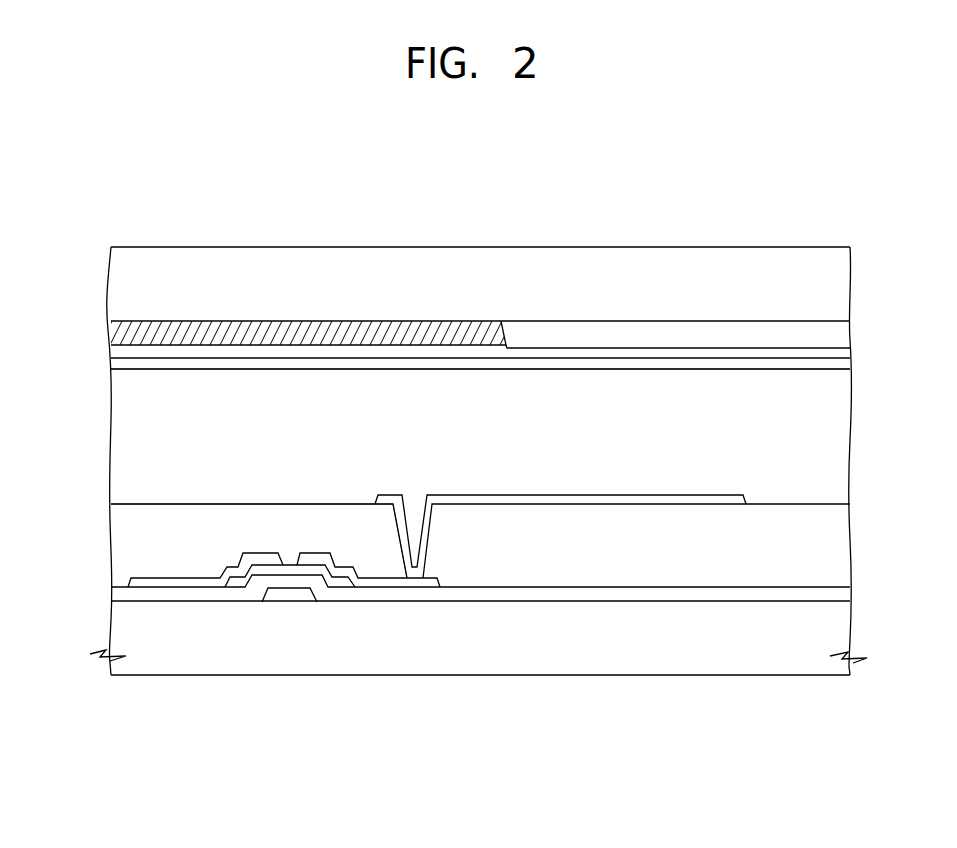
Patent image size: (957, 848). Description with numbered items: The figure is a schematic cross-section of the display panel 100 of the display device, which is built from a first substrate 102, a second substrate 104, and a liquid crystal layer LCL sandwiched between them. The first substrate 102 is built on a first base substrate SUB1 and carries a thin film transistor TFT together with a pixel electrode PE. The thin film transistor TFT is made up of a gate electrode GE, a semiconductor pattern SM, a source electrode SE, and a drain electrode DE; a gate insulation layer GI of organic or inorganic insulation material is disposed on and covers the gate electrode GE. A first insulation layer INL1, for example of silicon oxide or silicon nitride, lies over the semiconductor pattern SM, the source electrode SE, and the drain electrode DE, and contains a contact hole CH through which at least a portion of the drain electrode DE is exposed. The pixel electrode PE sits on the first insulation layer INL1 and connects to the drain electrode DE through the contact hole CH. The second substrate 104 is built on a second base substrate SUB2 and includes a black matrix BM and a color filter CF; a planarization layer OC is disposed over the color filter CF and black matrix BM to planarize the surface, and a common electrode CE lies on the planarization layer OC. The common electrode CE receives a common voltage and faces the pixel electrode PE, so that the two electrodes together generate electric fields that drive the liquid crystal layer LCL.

The display panel 100 is at (842, 190).
The first substrate 102 is at (83, 505).
The second substrate 104 is at (84, 247).
The first base substrate SUB1 is at (833, 630).
The second base substrate SUB2 is at (835, 285).
The black matrix BM is at (370, 330).
The color filter CF is at (836, 334).
The planarization layer OC is at (840, 355).
The common electrode CE is at (836, 374).
The liquid crystal layer LCL is at (833, 430).
The first insulation layer INL1 is at (835, 543).
The gate insulation layer GI is at (833, 593).
The gate electrode GE is at (289, 601).
The semiconductor pattern SM is at (242, 578).
The source electrode SE is at (203, 579).
The drain electrode DE is at (364, 579).
The contact hole CH is at (432, 546).
The pixel electrode PE is at (530, 500).
The thin film transistor TFT is at (195, 740).